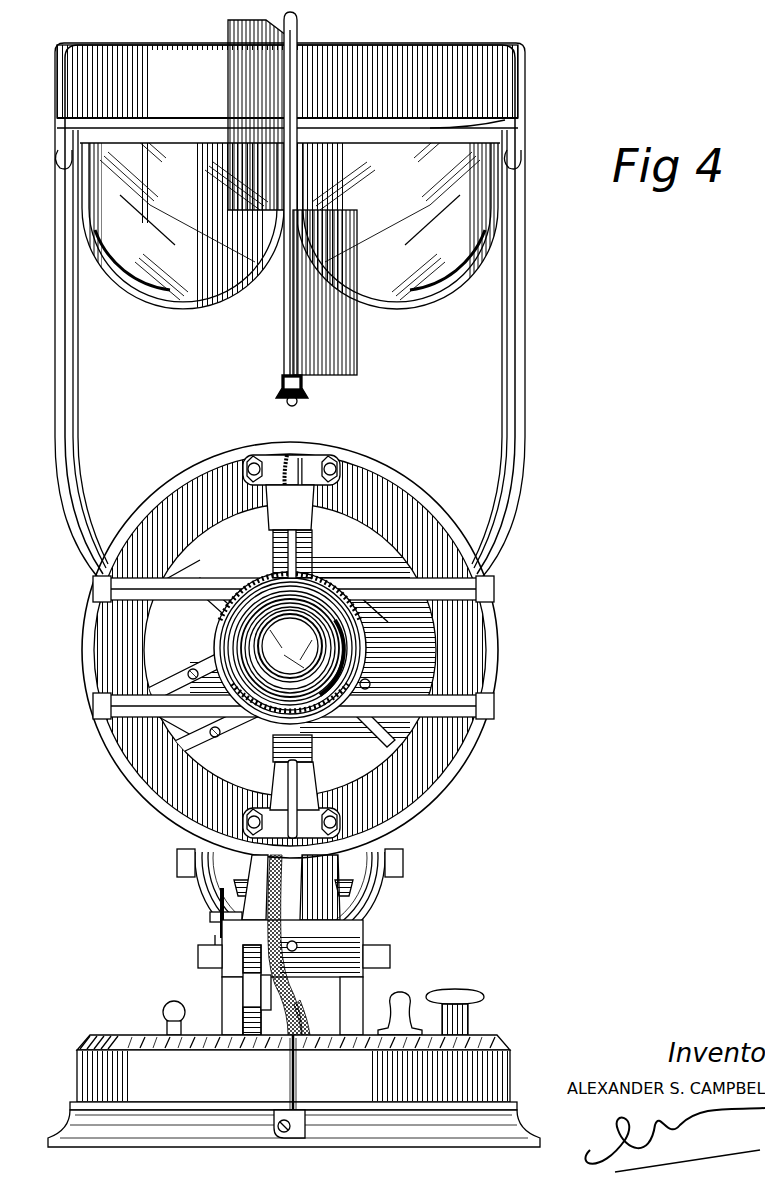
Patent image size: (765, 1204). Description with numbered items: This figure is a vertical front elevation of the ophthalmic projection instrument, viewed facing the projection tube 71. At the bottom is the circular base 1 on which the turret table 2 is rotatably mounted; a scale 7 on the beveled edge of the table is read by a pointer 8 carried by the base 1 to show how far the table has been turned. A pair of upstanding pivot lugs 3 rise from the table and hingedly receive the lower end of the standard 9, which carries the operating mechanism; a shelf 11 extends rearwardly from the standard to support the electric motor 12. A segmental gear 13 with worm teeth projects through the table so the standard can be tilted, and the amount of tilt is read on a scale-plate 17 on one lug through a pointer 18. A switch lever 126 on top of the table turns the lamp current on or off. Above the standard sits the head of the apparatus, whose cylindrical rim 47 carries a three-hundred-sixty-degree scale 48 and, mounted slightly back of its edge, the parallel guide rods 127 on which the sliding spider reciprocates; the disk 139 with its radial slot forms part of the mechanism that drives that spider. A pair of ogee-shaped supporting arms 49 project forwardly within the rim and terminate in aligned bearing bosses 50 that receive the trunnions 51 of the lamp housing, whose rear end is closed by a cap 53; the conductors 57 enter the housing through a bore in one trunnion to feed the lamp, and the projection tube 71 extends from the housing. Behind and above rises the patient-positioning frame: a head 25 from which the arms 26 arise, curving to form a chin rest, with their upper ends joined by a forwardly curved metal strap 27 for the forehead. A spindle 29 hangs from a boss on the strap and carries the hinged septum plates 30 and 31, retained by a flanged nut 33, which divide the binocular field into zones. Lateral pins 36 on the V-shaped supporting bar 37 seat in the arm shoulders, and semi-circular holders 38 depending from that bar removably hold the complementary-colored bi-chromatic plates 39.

The circular base 1 is at (497, 1140).
The table 2 is at (508, 1080).
The pivot lugs 3 is at (228, 988).
The scale 7 is at (503, 1048).
The pointer 8 is at (290, 1070).
The standard 9 is at (325, 910).
The shelf 11 is at (380, 960).
The electric motor 12 is at (372, 898).
The segmental gear 13 is at (243, 1008).
The scale-plate 17 is at (215, 890).
The pointer 18 is at (220, 922).
The head 25 is at (290, 646).
The arms 26 is at (66, 418).
The forwardly curved metal strap 27 is at (156, 62).
The spindle 29 is at (294, 22).
The septum plate 30 is at (236, 32).
The septum plate 31 is at (345, 356).
The flanged nut 33 is at (306, 388).
The dowels or lateral pins 36 is at (55, 170).
The supporting bar 37 is at (500, 128).
The semi-circular metal holders 38 is at (60, 150).
The bi-chromatic plates 39 is at (150, 264).
The cylindrical flange or rim 47 is at (494, 796).
The 360° scale 48 is at (436, 762).
The supporting arms 49 is at (318, 466).
The bearing bosses 50 is at (312, 546).
The trunnions 51 is at (276, 550).
The cap 53 is at (358, 654).
The conductors 57 is at (284, 452).
The projection tube 71 is at (302, 616).
The switch lever 126 is at (400, 1000).
The guide rods 127 is at (100, 705).
The disk 139 is at (415, 758).